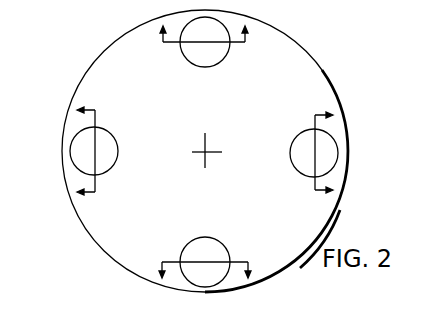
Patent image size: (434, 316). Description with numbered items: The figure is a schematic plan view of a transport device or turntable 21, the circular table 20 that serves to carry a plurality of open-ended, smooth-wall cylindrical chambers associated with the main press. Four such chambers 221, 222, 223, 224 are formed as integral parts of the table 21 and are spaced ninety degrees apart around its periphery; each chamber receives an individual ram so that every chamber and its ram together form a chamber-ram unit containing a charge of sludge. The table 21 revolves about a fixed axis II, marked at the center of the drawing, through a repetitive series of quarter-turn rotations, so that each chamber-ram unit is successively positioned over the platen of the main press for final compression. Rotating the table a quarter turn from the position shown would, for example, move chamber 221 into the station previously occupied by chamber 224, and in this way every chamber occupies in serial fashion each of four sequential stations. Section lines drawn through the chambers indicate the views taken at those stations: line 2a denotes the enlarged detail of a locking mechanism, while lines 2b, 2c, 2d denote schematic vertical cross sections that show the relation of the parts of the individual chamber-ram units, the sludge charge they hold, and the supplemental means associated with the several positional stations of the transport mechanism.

The disc 20 is at (268, 104).
The transport table 21 is at (337, 208).
The fixed axis II is at (205, 137).
The chamber 221 is at (212, 25).
The chamber 222 is at (80, 148).
The chamber 223 is at (207, 278).
The chamber 224 is at (328, 159).
The enlargement of locking mechanism 2a is at (205, 46).
The schematic vertical cross section 2b is at (98, 152).
The schematic vertical cross section 2c is at (204, 260).
The schematic vertical cross section 2d is at (310, 156).